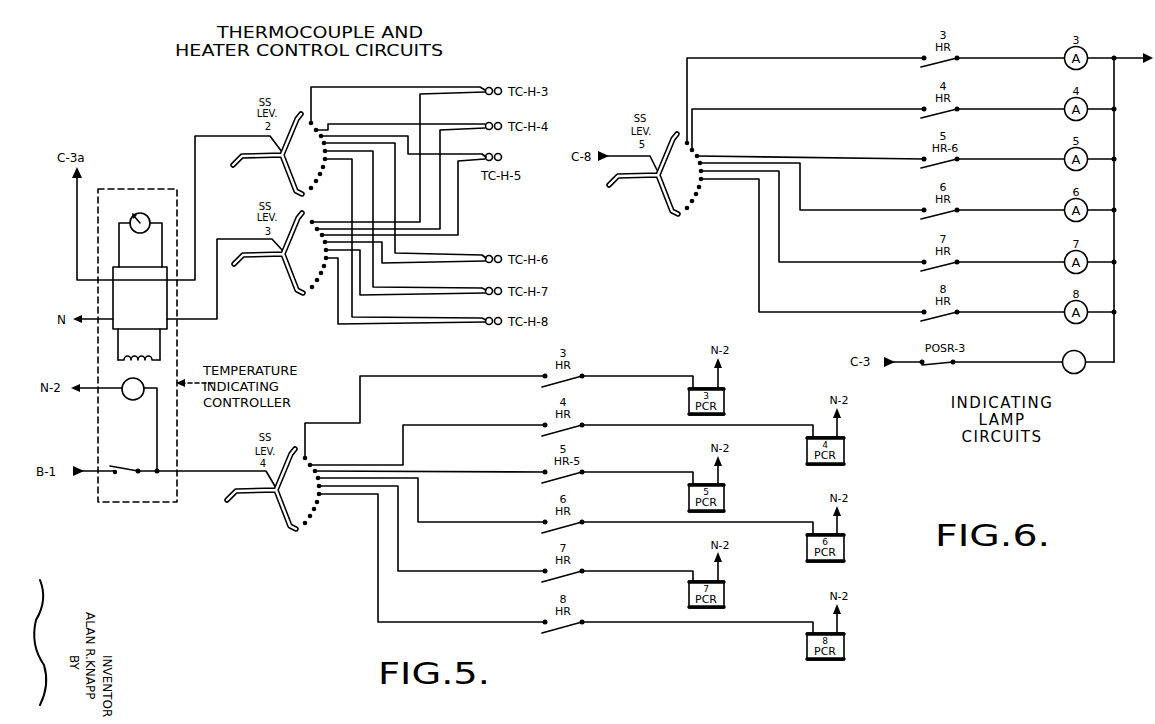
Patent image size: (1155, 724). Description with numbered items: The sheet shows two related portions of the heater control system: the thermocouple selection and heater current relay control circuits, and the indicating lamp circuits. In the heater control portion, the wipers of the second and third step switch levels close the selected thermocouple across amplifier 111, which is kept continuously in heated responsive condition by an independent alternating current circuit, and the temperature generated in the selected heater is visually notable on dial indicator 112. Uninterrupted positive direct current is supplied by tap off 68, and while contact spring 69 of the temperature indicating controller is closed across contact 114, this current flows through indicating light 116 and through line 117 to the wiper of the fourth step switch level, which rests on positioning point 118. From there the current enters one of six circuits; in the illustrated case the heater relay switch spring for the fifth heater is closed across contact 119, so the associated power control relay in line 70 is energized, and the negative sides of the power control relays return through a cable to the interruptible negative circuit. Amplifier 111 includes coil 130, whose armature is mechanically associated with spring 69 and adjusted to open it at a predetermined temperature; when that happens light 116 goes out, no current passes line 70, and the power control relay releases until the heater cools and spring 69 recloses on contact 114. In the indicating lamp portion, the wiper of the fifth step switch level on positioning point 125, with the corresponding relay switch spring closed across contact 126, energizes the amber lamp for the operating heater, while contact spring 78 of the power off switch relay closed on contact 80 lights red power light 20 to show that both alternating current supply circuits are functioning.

In FIG. 5, the dial indicator 112 is at (139, 213).
In FIG. 5, the amplifier 111 is at (113, 298).
In FIG. 5, the coil 130 is at (118, 357).
In FIG. 5, the indicating light 116 is at (133, 400).
In FIG. 5, the tap off 68 is at (87, 468).
In FIG. 5, the contact 114 is at (113, 484).
In FIG. 5, the contact spring 69 is at (124, 466).
In FIG. 5, the line 117 is at (205, 469).
In FIG. 5, the positioning point 118 is at (314, 467).
In FIG. 5, the line 70 is at (463, 470).
In FIG. 5, the contact 119 is at (541, 476).
In FIG. 6, the positioning point 125 is at (699, 155).
In FIG. 6, the contact 126 is at (923, 162).
In FIG. 6, the contact 80 is at (900, 366).
In FIG. 6, the contact spring 78 is at (942, 365).
In FIG. 6, the red power light 20 is at (1082, 371).